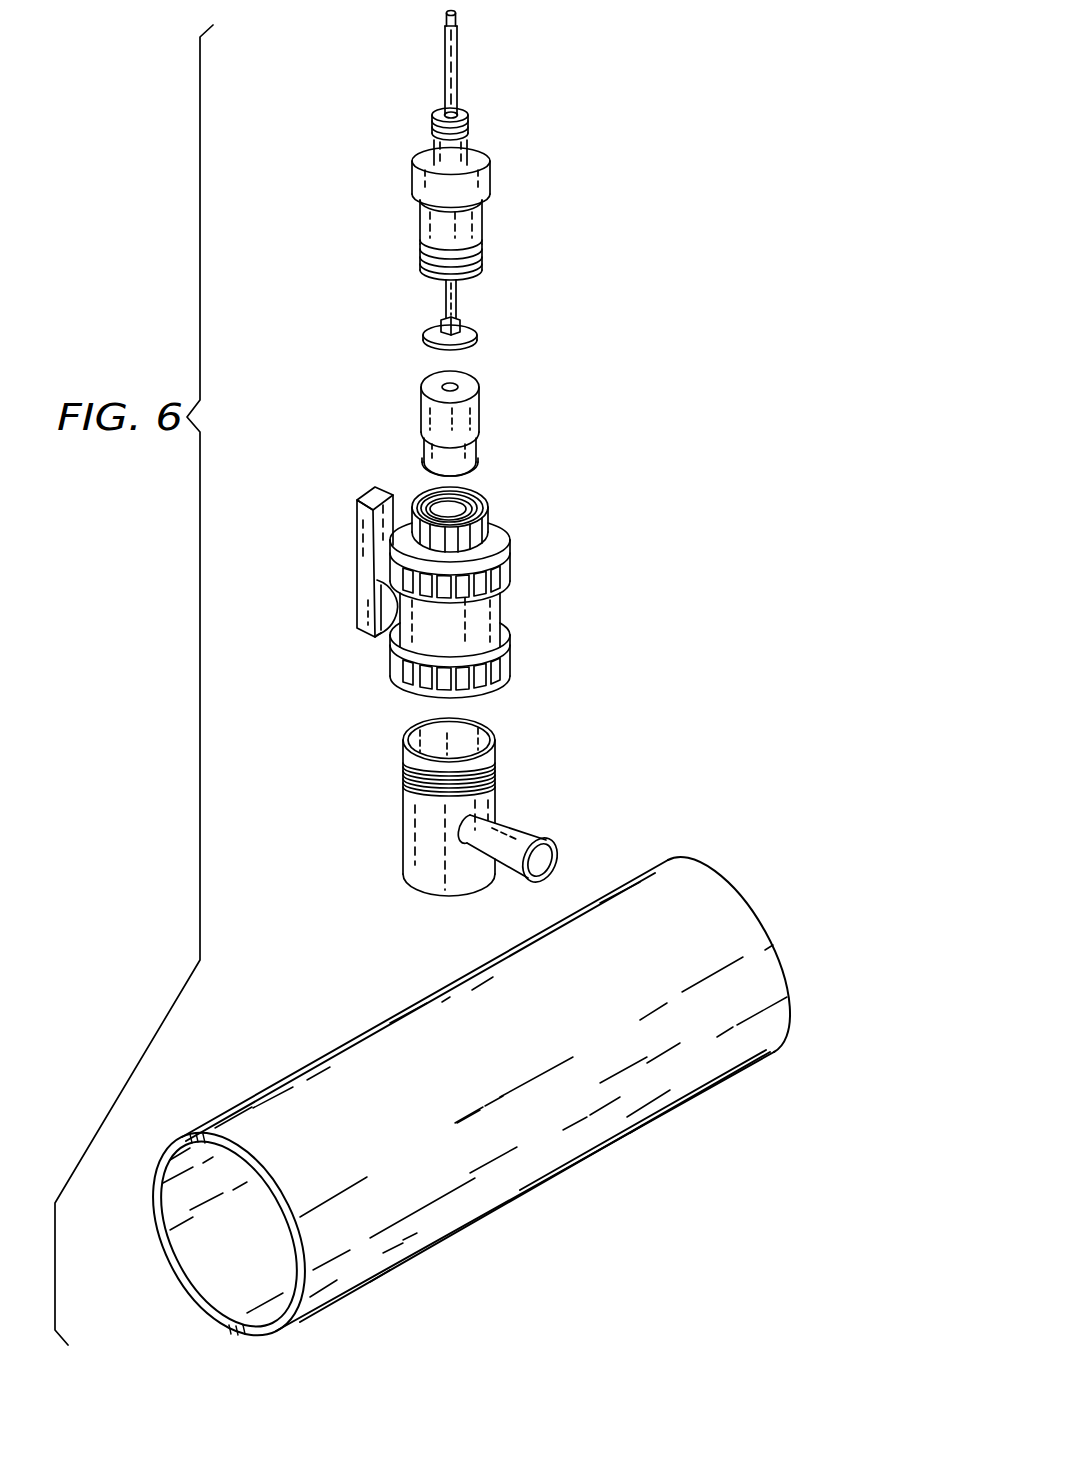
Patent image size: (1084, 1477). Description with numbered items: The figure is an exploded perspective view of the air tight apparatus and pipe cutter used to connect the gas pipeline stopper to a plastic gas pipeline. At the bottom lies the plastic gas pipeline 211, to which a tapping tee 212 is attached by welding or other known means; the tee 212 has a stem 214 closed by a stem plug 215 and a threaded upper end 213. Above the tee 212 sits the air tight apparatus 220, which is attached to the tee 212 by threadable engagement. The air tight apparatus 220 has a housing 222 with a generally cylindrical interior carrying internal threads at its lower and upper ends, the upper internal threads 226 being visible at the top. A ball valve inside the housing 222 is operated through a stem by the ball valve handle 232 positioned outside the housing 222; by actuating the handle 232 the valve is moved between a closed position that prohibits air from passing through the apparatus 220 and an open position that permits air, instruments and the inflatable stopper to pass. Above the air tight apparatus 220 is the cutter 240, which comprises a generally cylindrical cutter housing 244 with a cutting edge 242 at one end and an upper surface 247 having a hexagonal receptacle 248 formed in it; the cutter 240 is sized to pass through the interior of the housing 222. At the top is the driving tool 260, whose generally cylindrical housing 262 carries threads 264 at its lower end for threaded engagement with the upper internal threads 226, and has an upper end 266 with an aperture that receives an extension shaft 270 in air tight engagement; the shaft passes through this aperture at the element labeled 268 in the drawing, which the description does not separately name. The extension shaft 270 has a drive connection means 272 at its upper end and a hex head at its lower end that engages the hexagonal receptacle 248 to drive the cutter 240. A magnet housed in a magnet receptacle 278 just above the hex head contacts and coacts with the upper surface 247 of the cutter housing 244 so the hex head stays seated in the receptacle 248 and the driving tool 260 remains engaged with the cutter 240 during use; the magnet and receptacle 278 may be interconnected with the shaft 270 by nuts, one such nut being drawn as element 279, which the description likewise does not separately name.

The plastic gas pipeline 211 is at (658, 1096).
The tapping tee 212 is at (474, 807).
The threaded upper end 213 is at (497, 762).
The stem 214 is at (516, 826).
The stem plug 215 is at (548, 860).
The air tight apparatus 220 is at (446, 584).
The housing 222 is at (511, 643).
The upper internal threads 226 is at (466, 504).
The ball valve handle 232 is at (364, 598).
The cutter 240 is at (453, 403).
The cutting edge 242 is at (478, 461).
The cutter housing 244 is at (421, 416).
The upper surface 247 is at (432, 386).
The hexagonal receptacle 248 is at (445, 385).
The driving tool 260 is at (504, 209).
The housing 262 is at (480, 222).
The threads 264 is at (484, 250).
The upper end 266 is at (468, 115).
The seal 268 is at (458, 113).
The extension shaft 270 is at (445, 70).
The drive connection means 272 is at (458, 13).
The magnet receptacle 278 is at (472, 337).
The nut 279 is at (462, 322).